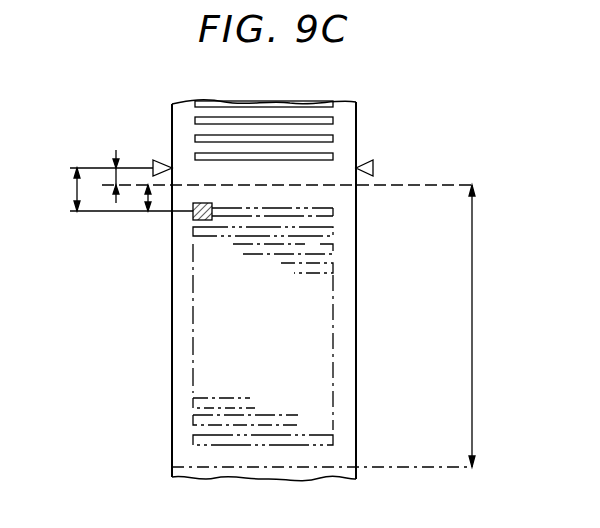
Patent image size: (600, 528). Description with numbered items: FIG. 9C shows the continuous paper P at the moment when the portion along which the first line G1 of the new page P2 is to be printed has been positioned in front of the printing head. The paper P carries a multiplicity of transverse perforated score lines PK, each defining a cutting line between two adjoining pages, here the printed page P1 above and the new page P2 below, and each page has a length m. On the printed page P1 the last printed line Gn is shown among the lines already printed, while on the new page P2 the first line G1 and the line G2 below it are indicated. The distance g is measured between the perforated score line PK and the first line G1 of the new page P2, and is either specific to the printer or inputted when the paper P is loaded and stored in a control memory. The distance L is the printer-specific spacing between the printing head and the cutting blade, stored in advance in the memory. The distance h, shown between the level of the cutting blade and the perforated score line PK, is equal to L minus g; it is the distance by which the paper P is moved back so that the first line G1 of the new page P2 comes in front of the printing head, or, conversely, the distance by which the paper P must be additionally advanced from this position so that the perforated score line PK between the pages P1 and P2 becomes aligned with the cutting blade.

The paper P is at (356, 322).
The printed page P1 is at (172, 126).
The new page P2 is at (181, 351).
The perforated score line PK is at (280, 183).
The last printed line Gn is at (333, 158).
The first line G1 is at (333, 212).
The second line G2 is at (333, 231).
The distance h is at (116, 181).
The distance L is at (126, 189).
The distance g is at (148, 198).
The page length m is at (482, 326).